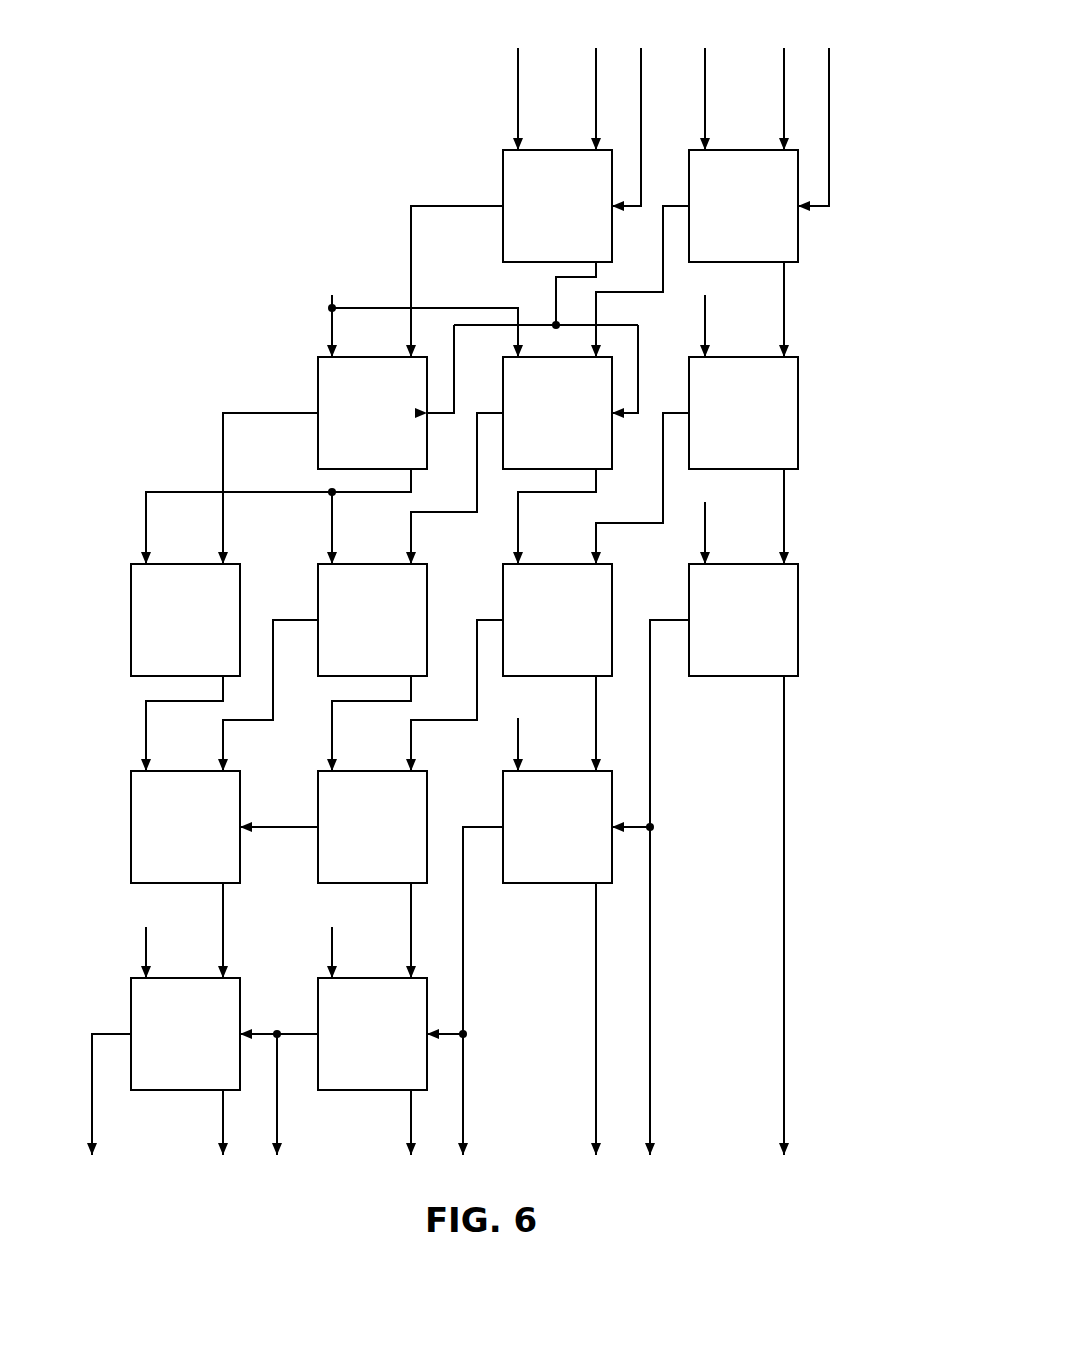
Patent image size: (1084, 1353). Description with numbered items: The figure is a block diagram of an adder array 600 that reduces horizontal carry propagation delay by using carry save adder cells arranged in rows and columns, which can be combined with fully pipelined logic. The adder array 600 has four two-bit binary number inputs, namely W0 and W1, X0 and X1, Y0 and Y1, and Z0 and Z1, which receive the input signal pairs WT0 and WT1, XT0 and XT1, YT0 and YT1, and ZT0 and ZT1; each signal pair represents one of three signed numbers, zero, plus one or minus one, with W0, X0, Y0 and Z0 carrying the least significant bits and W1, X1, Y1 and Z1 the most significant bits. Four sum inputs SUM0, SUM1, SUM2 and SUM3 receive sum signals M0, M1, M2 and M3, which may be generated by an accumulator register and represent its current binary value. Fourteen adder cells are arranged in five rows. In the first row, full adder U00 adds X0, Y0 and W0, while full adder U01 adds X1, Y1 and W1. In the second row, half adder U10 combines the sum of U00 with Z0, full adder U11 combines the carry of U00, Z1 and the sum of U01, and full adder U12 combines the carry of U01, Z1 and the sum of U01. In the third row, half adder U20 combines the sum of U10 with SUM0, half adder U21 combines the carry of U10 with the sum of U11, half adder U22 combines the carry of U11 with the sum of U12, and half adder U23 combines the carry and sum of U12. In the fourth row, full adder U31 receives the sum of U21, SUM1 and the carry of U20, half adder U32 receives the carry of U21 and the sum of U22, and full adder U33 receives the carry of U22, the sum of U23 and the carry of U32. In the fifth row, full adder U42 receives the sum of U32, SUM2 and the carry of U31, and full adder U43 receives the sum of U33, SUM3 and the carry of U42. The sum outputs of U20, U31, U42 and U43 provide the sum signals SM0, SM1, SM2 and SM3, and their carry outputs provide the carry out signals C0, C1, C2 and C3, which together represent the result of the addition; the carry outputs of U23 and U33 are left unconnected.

The adder array 600 is at (232, 80).
The first adder cell U00 is at (743, 206).
The second adder cell U01 is at (557, 206).
The third adder cell U10 is at (743, 413).
The fourth adder cell U11 is at (557, 413).
The fifth adder cell U12 is at (372, 413).
The sixth adder cell U20 is at (743, 620).
The seventh adder cell U21 is at (557, 620).
The eighth adder cell U22 is at (372, 620).
The ninth adder cell U23 is at (185, 620).
The tenth adder cell U31 is at (557, 827).
The eleventh adder cell U32 is at (372, 827).
The twelfth adder cell U33 is at (185, 827).
The thirteenth adder cell U42 is at (372, 1034).
The fourteenth adder cell U43 is at (185, 1034).
The input Y1 is at (492, 87).
The input X1 is at (571, 87).
The input W1 is at (654, 117).
The input Y0 is at (686, 87).
The input X0 is at (759, 87).
The input W0 is at (842, 117).
The input signal YT1 is at (518, 108).
The input signal XT1 is at (596, 108).
The input signal WT1 is at (670, 128).
The input signal YT0 is at (705, 88).
The input signal XT0 is at (784, 67).
The input signal WT0 is at (829, 66).
The input Z1 is at (395, 312).
The input Z0 is at (729, 312).
The input signal ZT1 is at (332, 328).
The input signal ZT0 is at (705, 320).
The sum input SUM0 is at (718, 519).
The sum input SUM1 is at (507, 731).
The sum input SUM2 is at (320, 940).
The sum input SUM3 is at (133, 940).
The sum signal M0 is at (705, 522).
The sum signal M1 is at (518, 750).
The sum signal M2 is at (332, 955).
The sum signal M3 is at (146, 955).
The carry out signal C0 is at (650, 1112).
The carry out signal C1 is at (463, 1112).
The carry out signal C2 is at (277, 1112).
The carry out signal C3 is at (92, 1112).
The sum signal SM0 is at (784, 1133).
The sum signal SM1 is at (594, 1133).
The sum signal SM2 is at (411, 1131).
The sum signal SM3 is at (223, 1131).